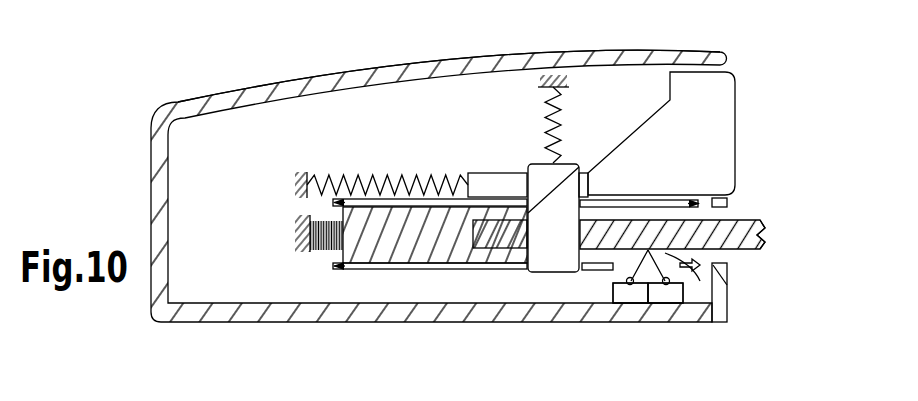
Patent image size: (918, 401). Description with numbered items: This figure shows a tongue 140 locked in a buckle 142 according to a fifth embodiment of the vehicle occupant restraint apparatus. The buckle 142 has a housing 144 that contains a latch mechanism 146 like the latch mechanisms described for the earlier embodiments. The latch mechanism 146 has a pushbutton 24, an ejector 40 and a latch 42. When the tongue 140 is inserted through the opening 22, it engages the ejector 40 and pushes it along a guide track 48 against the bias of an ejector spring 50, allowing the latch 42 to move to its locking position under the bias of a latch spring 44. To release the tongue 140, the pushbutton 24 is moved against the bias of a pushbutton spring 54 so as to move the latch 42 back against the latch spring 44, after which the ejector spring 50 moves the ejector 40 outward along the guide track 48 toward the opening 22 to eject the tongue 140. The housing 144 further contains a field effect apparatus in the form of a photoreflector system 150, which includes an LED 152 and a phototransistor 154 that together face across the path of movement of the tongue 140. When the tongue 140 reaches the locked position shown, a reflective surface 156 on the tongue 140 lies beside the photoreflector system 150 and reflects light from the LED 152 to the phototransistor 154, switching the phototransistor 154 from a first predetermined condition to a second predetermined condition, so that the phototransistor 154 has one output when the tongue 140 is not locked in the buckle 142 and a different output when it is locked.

The buckle 142 is at (196, 78).
The housing 144 is at (343, 82).
The latch mechanism 146 is at (258, 161).
The pushbutton spring 54 is at (323, 173).
The ejector spring 50 is at (318, 252).
The guide track 48 is at (400, 269).
The ejector 40 is at (452, 243).
The latch spring 44 is at (545, 99).
The latch 42 is at (558, 175).
The pushbutton 24 is at (737, 130).
The opening 22 is at (736, 212).
The tongue 140 is at (733, 232).
The reflective surface 156 is at (727, 284).
The photoreflector system 150 is at (648, 306).
The phototransistor 154 is at (626, 292).
The LED 152 is at (668, 294).